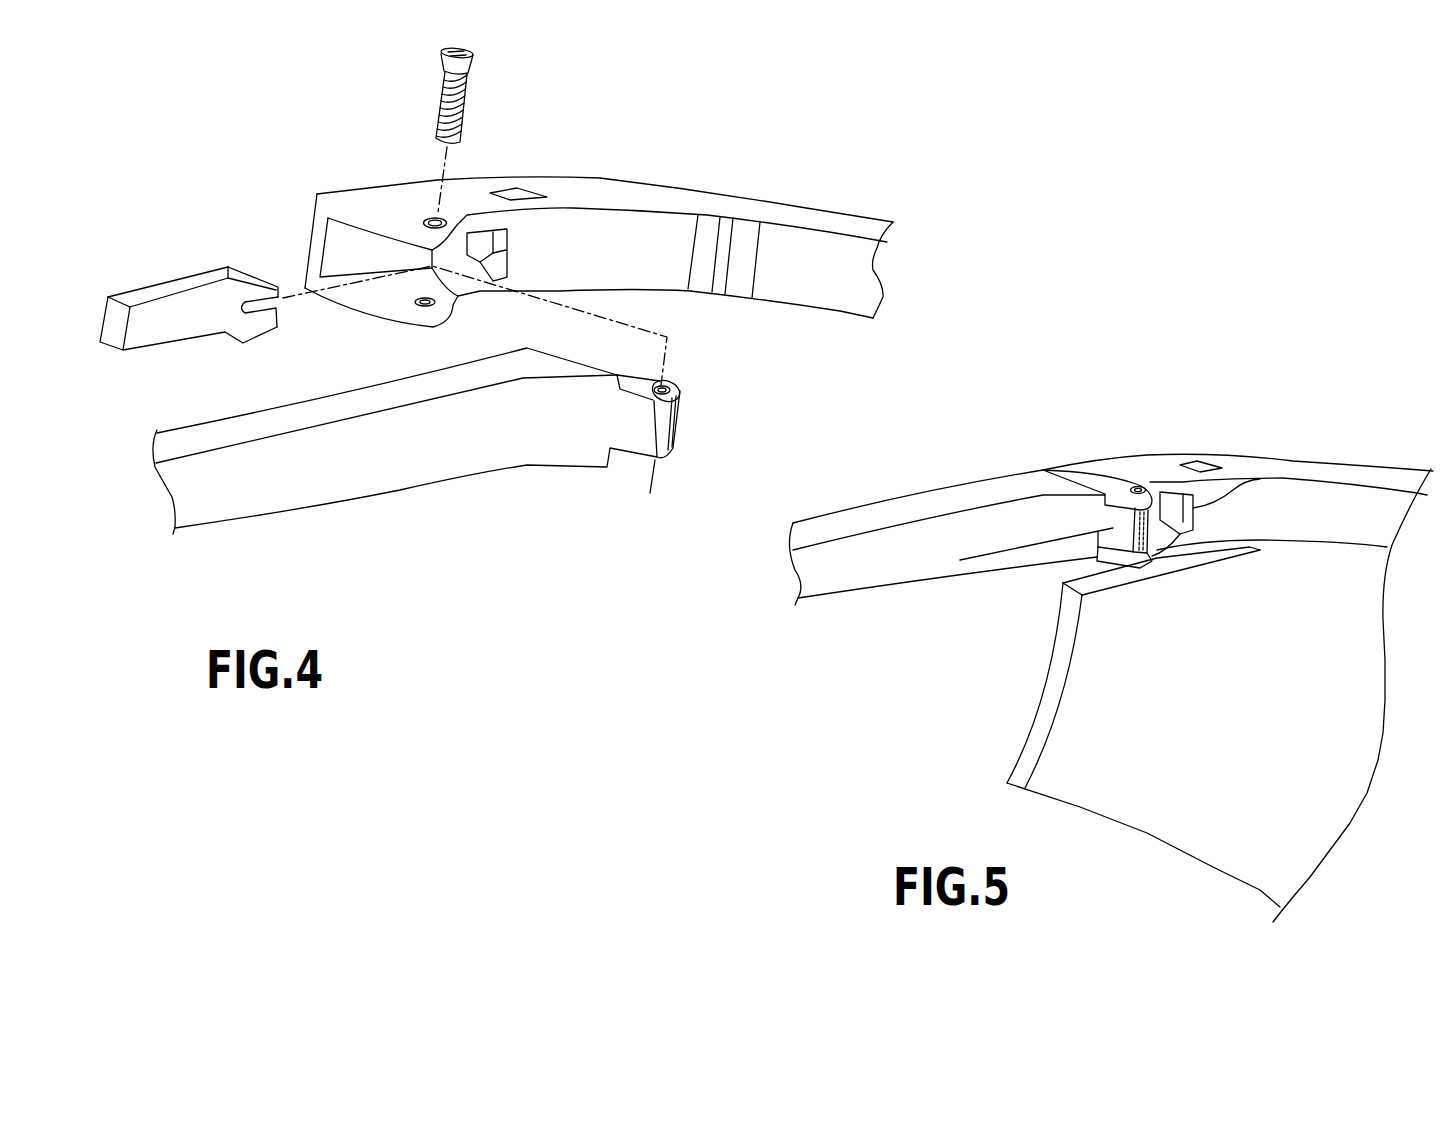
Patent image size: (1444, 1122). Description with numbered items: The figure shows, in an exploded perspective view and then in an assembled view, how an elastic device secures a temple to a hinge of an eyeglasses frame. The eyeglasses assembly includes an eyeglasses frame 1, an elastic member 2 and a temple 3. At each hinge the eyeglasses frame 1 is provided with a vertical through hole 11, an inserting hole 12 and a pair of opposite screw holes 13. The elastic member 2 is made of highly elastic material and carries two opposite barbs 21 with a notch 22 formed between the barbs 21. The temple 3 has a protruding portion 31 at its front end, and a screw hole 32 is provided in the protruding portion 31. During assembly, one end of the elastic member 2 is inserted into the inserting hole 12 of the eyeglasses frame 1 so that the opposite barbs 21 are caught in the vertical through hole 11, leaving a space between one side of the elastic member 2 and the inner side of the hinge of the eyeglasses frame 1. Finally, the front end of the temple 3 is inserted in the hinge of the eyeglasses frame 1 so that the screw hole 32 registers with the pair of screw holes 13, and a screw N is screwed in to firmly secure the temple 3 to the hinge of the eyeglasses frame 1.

In FIG. 4, the eyeglasses frame 1 is at (647, 175).
In FIG. 5, the eyeglasses frame 1 is at (1293, 503).
In FIG. 4, the vertical through hole 11 is at (528, 192).
In FIG. 5, the vertical through hole 11 is at (1199, 466).
In FIG. 4, the inserting hole 12 is at (482, 242).
In FIG. 5, the inserting hole 12 is at (1247, 478).
In FIG. 4, the screw holes 13 is at (426, 218).
In FIG. 4, the screw N is at (448, 97).
In FIG. 5, the screw N is at (1138, 486).
In FIG. 4, the elastic member 2 is at (163, 284).
In FIG. 5, the elastic member 2 is at (1162, 505).
In FIG. 4, the barbs 21 is at (263, 283).
In FIG. 4, the notch 22 is at (280, 307).
In FIG. 4, the temple 3 is at (452, 482).
In FIG. 5, the temple 3 is at (955, 530).
In FIG. 4, the protruding portion 31 is at (678, 423).
In FIG. 5, the protruding portion 31 is at (1057, 548).
In FIG. 4, the screw hole 32 is at (670, 388).